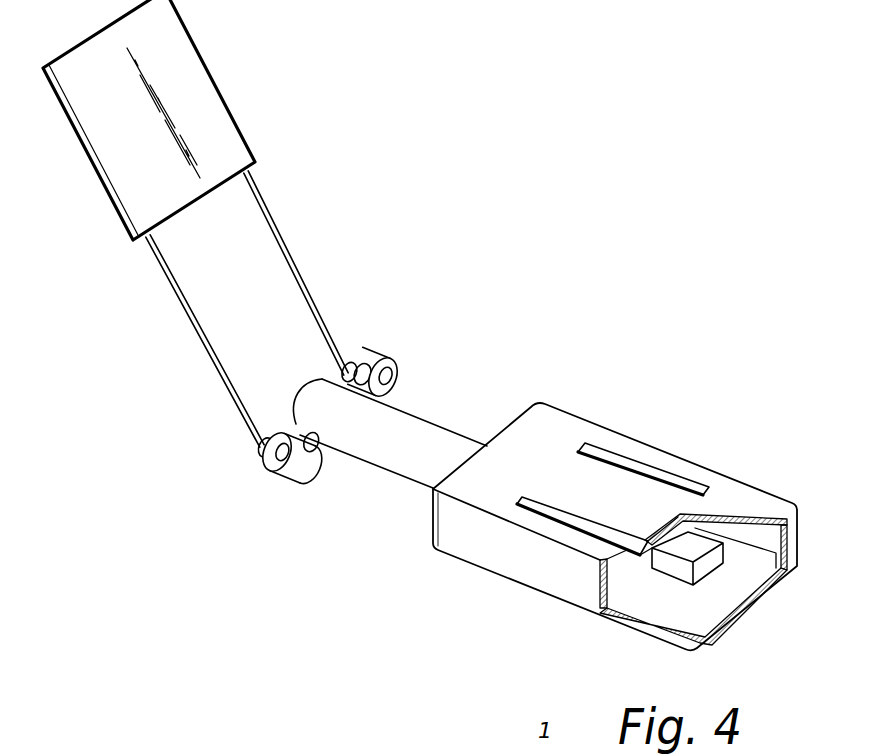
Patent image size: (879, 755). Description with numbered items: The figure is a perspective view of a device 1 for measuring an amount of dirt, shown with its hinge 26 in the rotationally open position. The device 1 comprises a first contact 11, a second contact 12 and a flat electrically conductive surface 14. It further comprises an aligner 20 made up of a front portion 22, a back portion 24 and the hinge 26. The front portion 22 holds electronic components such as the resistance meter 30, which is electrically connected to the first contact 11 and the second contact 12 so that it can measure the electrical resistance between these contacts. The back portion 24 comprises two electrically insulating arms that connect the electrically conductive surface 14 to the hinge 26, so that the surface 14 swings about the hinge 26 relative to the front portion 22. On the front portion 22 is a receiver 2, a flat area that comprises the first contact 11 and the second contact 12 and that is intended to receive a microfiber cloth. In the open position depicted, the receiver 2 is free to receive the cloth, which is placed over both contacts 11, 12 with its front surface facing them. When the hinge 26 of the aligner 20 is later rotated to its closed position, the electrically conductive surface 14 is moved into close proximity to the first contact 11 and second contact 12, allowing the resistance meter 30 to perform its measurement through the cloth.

The device 1 is at (615, 429).
The receiver 2 is at (638, 513).
The first contact 11 is at (548, 508).
The second contact 12 is at (630, 462).
The electrically conductive surface 14 is at (200, 65).
The aligner 20 is at (197, 490).
The front portion 22 is at (367, 487).
The back portion 24 is at (150, 355).
The hinge 26 is at (408, 350).
The resistance meter 30 is at (695, 545).